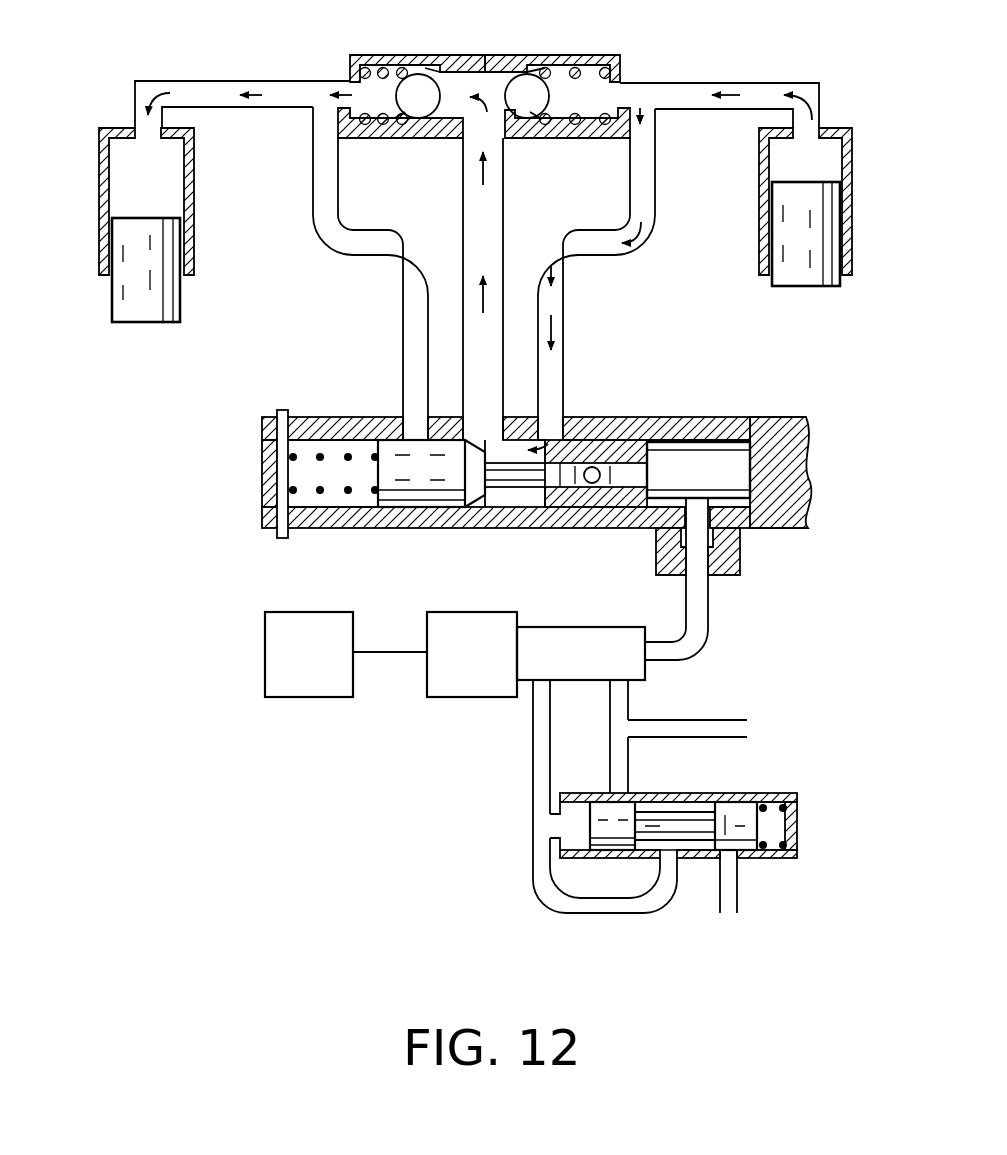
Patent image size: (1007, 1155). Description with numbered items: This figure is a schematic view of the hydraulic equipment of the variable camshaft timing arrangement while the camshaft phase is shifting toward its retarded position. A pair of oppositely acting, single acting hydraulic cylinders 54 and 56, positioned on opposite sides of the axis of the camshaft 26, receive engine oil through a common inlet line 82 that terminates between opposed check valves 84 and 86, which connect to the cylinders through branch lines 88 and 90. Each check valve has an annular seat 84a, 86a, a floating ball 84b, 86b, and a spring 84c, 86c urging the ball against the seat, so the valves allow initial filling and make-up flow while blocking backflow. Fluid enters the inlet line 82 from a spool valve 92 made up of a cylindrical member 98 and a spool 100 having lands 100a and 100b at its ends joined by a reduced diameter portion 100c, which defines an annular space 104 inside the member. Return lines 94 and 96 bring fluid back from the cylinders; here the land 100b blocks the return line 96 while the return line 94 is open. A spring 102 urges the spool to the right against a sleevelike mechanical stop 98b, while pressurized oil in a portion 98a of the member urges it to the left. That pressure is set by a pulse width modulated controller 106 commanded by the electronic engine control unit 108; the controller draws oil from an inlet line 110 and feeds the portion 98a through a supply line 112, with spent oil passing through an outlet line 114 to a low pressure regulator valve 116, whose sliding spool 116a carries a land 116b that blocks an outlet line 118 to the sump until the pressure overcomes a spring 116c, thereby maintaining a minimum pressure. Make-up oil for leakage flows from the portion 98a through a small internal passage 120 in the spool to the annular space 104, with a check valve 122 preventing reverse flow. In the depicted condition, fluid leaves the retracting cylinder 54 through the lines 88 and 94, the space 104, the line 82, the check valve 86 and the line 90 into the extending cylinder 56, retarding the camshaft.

The camshaft 26 is at (812, 456).
The hydraulic cylinder 54 is at (852, 238).
The hydraulic cylinder 56 is at (99, 262).
The inlet line 82 is at (505, 215).
The check valve 84 is at (590, 57).
The annular seat 84a is at (535, 63).
The floating ball 84b is at (528, 112).
The spring 84c is at (594, 70).
The check valve 86 is at (385, 55).
The annular seat 86a is at (435, 63).
The floating ball 86b is at (420, 110).
The spring 86c is at (378, 125).
The branch line 88 is at (706, 83).
The branch line 90 is at (246, 81).
The spool valve 92 is at (692, 425).
The return line 94 is at (563, 290).
The return line 96 is at (403, 310).
The cylindrical member 98 is at (790, 425).
The portion of cylindrical member 98a is at (738, 455).
The sleevelike mechanical stop 98b is at (742, 512).
The spool 100 is at (590, 440).
The cylindrical land 100a is at (620, 445).
The cylindrical land 100b is at (347, 440).
The reduced diameter portion 100c is at (455, 508).
The spring 102 is at (322, 492).
The annular space 104 is at (520, 507).
The controller 106 is at (465, 697).
The electronic engine control unit 108 is at (300, 697).
The inlet line 110 is at (690, 720).
The supply line 112 is at (708, 620).
The outlet line 114 is at (533, 795).
The low pressure regulator valve 116 is at (732, 800).
The sliding spool 116a is at (655, 800).
The land 116b is at (725, 860).
The spring 116c is at (790, 800).
The outlet line 118 is at (738, 895).
The internal passage 120 is at (612, 490).
The check valve 122 is at (580, 440).